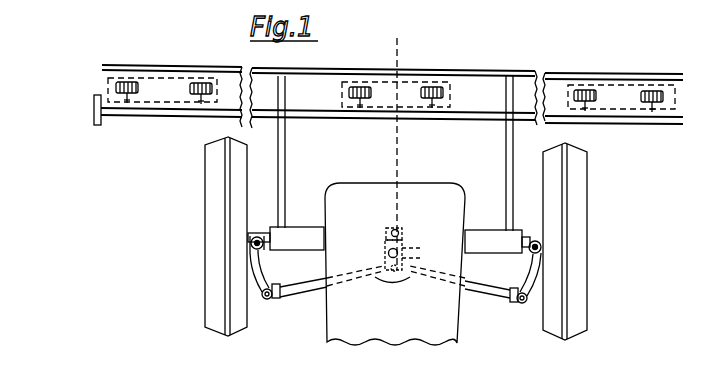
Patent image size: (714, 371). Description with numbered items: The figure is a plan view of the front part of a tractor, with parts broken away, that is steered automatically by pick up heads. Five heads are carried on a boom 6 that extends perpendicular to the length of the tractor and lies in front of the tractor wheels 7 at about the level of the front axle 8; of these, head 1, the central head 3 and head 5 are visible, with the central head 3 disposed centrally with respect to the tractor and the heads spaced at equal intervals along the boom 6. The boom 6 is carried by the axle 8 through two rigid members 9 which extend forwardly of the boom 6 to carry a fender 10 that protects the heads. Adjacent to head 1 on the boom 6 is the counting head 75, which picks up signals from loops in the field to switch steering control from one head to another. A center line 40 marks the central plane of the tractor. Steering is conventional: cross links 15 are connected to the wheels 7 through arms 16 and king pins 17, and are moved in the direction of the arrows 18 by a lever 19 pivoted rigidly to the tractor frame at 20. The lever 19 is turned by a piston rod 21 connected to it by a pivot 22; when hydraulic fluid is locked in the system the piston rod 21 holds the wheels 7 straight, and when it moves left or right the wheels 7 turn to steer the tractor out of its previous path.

The pick up head 1 is at (172, 70).
The counting head 75 is at (99, 121).
The central head 3 is at (401, 81).
The boom 6 is at (476, 120).
The fender 10 is at (443, 81).
The pick up head 5 is at (623, 85).
The center line 40 is at (394, 57).
The rigid members 9 is at (285, 146).
The tractor wheels 7 is at (216, 163).
The front axle 8 is at (299, 237).
The king pins 17 is at (255, 237).
The arms 16 is at (252, 263).
The cross links 15 is at (303, 292).
The arrows 18 is at (398, 276).
The lever 19 is at (383, 223).
The pivot on tractor frame 20 is at (400, 228).
The piston rod 21 is at (427, 246).
The pivot 22 is at (388, 256).